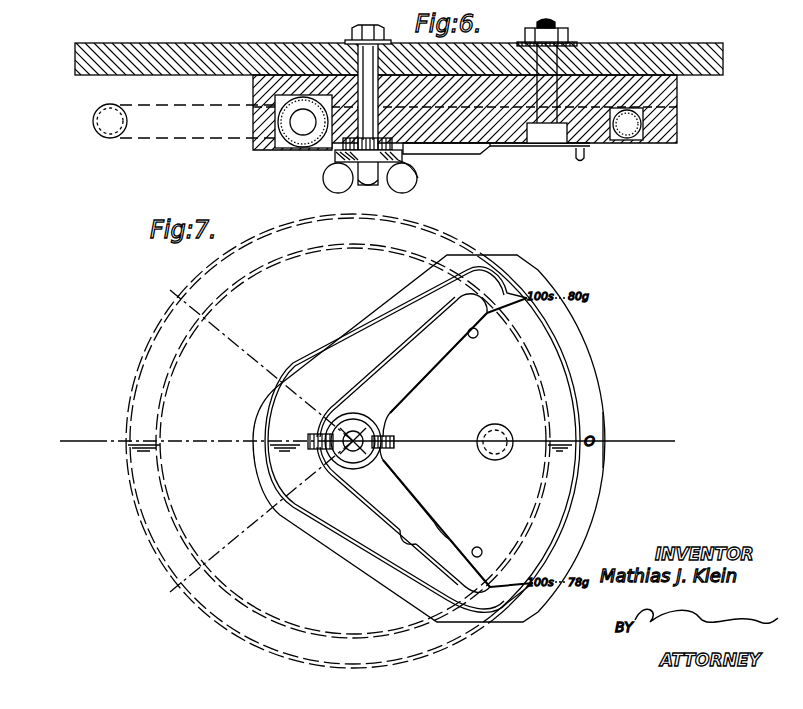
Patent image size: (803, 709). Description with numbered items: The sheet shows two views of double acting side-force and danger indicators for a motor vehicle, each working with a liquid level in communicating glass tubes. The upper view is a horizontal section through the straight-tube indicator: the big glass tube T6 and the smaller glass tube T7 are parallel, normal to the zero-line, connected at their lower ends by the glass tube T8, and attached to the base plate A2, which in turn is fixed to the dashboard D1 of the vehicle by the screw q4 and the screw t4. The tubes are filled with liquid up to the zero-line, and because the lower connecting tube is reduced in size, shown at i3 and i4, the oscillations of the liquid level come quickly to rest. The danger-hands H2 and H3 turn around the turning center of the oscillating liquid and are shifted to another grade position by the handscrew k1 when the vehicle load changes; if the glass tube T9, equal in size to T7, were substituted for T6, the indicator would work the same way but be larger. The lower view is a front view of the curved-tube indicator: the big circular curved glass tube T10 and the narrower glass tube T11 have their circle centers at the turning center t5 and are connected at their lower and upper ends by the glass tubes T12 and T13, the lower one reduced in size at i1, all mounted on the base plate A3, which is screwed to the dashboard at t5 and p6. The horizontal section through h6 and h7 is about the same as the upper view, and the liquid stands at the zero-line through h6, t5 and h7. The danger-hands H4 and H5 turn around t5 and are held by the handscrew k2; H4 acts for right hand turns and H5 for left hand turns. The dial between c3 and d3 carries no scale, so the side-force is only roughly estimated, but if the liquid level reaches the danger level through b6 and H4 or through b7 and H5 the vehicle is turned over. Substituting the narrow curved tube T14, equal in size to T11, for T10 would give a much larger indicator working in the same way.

In FIG. 6, the dashboard D1 is at (682, 60).
In FIG. 6, the base plate A2 is at (666, 108).
In FIG. 6, the glass tube T9 is at (104, 124).
In FIG. 6, the glass tube T6 is at (291, 148).
In FIG. 6, the glass tube T7 is at (628, 130).
In FIG. 6, the screw t4 is at (376, 26).
In FIG. 6, the handscrew k1 is at (340, 165).
In FIG. 6, the reduced size portion of lower connecting tube i3 is at (366, 184).
In FIG. 6, the danger-hand H3 is at (424, 177).
In FIG. 6, the glass tube T8 is at (520, 148).
In FIG. 6, the reduced size portion of lower connecting tube i4 is at (541, 146).
In FIG. 6, the danger-hand H2 is at (566, 148).
In FIG. 6, the screw q4 is at (560, 18).
In FIG. 7, the danger level b6 is at (261, 365).
In FIG. 7, the danger level b7 is at (261, 516).
In FIG. 7, the narrow circular curved glass tube T14 is at (152, 332).
In FIG. 7, the circular curved glass tube T10 is at (268, 444).
In FIG. 7, the zero-line end h6 is at (131, 434).
In FIG. 7, the zero-line end h7 is at (587, 444).
In FIG. 7, the base plate A3 is at (580, 537).
In FIG. 7, the glass tube T13 is at (400, 318).
In FIG. 7, the danger-hand H5 is at (445, 362).
In FIG. 7, the glass tube T12 is at (388, 540).
In FIG. 7, the danger-hand H4 is at (445, 522).
In FIG. 7, the reduced size portion of lower connecting tube i1 is at (416, 572).
In FIG. 7, the turning center t5 is at (345, 455).
In FIG. 7, the handscrew k2 is at (390, 448).
In FIG. 7, the screw p6 is at (494, 455).
In FIG. 7, the dial end d3 is at (515, 265).
In FIG. 7, the dial end c3 is at (514, 607).
In FIG. 7, the circular curved glass tube T11 is at (562, 432).